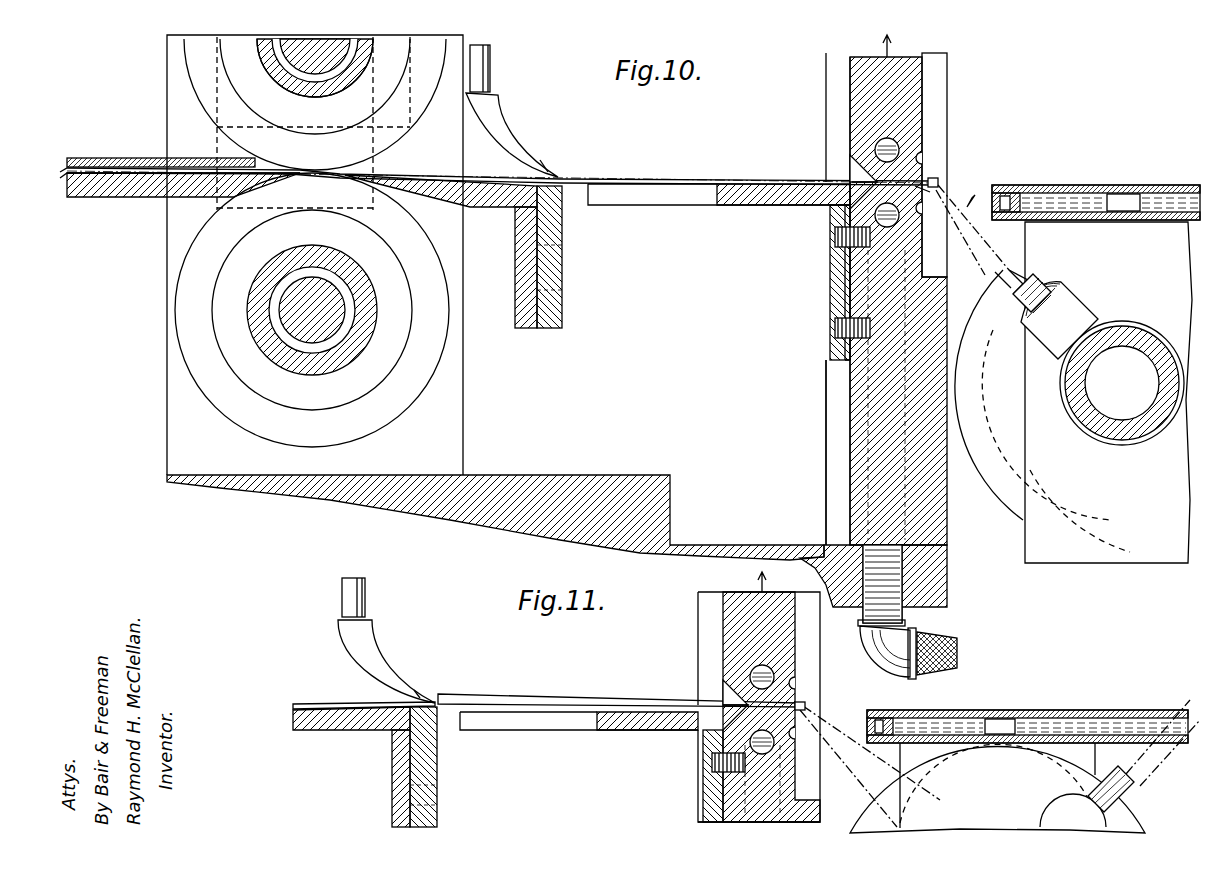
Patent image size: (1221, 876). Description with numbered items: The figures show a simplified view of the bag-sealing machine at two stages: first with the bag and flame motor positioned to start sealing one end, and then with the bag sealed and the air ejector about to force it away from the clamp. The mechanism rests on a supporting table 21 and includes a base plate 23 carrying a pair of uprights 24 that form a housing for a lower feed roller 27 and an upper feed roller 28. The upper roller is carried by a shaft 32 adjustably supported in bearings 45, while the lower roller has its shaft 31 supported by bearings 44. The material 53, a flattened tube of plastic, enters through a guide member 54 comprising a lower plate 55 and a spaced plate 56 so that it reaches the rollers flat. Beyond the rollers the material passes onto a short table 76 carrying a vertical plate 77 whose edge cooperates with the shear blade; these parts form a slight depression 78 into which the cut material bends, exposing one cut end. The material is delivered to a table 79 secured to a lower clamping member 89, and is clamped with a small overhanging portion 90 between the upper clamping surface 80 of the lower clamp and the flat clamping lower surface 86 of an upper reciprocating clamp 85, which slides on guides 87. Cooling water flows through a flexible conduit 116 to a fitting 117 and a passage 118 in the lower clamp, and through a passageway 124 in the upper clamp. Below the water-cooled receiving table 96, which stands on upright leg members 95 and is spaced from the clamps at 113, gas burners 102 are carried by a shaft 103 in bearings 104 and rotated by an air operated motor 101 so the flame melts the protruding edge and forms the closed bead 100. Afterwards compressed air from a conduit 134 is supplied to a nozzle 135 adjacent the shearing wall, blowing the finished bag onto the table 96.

In FIG. 10, the supporting table 21 is at (930, 572).
In FIG. 10, the base plate 23 is at (508, 500).
In FIG. 10, the uprights 24 is at (167, 426).
In FIG. 10, the lower feed roller 27 is at (241, 406).
In FIG. 10, the upper feed roller 28 is at (197, 64).
In FIG. 10, the shaft 31 is at (290, 320).
In FIG. 10, the shaft 32 is at (328, 53).
In FIG. 10, the bearings 44 is at (257, 348).
In FIG. 10, the bearings 45 is at (316, 96).
In FIG. 10, the material 53 is at (660, 170).
In FIG. 11, the material 53 is at (340, 705).
In FIG. 10, the guide member 54 is at (123, 205).
In FIG. 10, the lower plate 55 is at (160, 190).
In FIG. 10, the plate 56 is at (120, 158).
In FIG. 10, the short table 76 is at (495, 205).
In FIG. 11, the short table 76 is at (350, 732).
In FIG. 10, the vertical plate 77 is at (560, 308).
In FIG. 11, the vertical plate 77 is at (440, 810).
In FIG. 10, the depression 78 is at (545, 195).
In FIG. 11, the depression 78 is at (392, 737).
In FIG. 10, the table 79 is at (742, 206).
In FIG. 11, the table 79 is at (626, 732).
In FIG. 10, the upper clamping surface 80 is at (942, 188).
In FIG. 11, the upper clamping surface 80 is at (807, 709).
In FIG. 10, the upper reciprocating clamp 85 is at (912, 108).
In FIG. 11, the upper reciprocating clamp 85 is at (725, 628).
In FIG. 10, the flat clamping lower surface 86 is at (928, 180).
In FIG. 11, the flat clamping lower surface 86 is at (800, 702).
In FIG. 10, the guides 87 is at (937, 68).
In FIG. 10, the lower clamping member 89 is at (850, 390).
In FIG. 11, the lower clamping member 89 is at (738, 808).
In FIG. 10, the overhanging portion 90 is at (938, 181).
In FIG. 10, the upright leg members 95 is at (1058, 450).
In FIG. 11, the upright leg members 95 is at (1086, 752).
In FIG. 10, the table 96 is at (1124, 185).
In FIG. 11, the table 96 is at (1108, 710).
In FIG. 11, the closed bead 100 is at (866, 720).
In FIG. 10, the air operated motor 101 is at (1005, 492).
In FIG. 11, the air operated motor 101 is at (1140, 827).
In FIG. 10, the gas burners 102 is at (1072, 290).
In FIG. 11, the gas burners 102 is at (1122, 794).
In FIG. 10, the shaft 103 is at (1106, 441).
In FIG. 10, the bearings 104 is at (1140, 447).
In FIG. 10, the spacing 113 is at (1000, 178).
In FIG. 11, the spacing 113 is at (885, 712).
In FIG. 10, the flexible conduit 116 is at (960, 656).
In FIG. 10, the fitting 117 is at (866, 652).
In FIG. 10, the passage 118 is at (872, 217).
In FIG. 11, the passage 118 is at (730, 760).
In FIG. 10, the passageway 124 is at (900, 150).
In FIG. 11, the passageway 124 is at (750, 677).
In FIG. 10, the conduit 134 is at (492, 57).
In FIG. 11, the conduit 134 is at (366, 588).
In FIG. 10, the nozzle 135 is at (495, 118).
In FIG. 11, the nozzle 135 is at (385, 652).